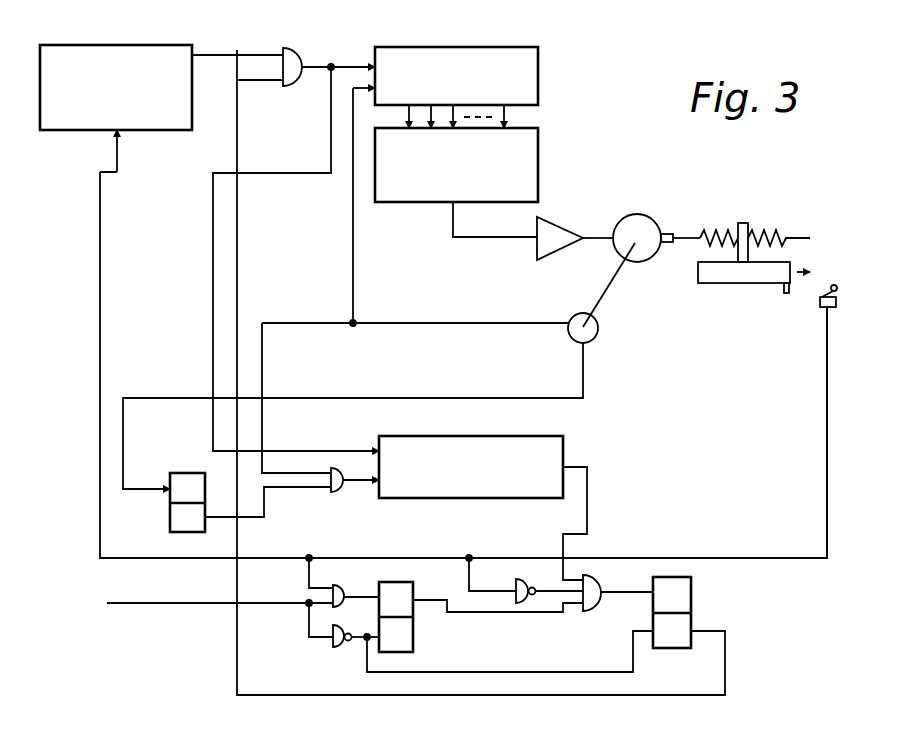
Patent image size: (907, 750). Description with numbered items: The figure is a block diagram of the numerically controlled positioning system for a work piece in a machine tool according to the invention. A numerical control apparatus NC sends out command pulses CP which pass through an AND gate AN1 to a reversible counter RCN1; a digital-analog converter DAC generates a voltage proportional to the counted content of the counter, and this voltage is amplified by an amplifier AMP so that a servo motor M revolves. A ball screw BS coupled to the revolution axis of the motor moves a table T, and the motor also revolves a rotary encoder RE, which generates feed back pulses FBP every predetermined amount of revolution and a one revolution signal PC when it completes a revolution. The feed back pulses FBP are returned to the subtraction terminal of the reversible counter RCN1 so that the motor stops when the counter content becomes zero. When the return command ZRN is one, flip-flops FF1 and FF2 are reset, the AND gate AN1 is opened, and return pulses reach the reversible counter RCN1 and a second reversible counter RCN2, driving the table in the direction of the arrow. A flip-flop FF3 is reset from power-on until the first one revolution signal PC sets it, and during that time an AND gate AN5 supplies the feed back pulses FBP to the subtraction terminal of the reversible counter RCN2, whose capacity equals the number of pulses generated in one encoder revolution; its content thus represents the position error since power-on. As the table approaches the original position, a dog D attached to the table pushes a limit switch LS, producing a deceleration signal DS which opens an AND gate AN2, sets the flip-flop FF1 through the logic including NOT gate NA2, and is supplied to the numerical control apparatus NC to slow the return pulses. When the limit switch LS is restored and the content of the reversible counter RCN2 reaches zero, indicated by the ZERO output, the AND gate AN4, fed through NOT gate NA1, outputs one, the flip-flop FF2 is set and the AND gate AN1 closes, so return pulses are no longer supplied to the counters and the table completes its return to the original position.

The numerical control apparatus NC is at (185, 26).
The command pulses CP is at (238, 52).
The AND gate AN1 is at (296, 50).
The reversible counter RCN1 is at (538, 65).
The digital-analog converter DAC is at (538, 148).
The amplifier AMP is at (575, 214).
The servo motor M is at (643, 222).
The ball screw BS is at (778, 234).
The table T is at (730, 284).
The dog D is at (786, 294).
The limit switch LS is at (837, 302).
The deceleration signal DS is at (826, 428).
The feed back pulses FBP is at (502, 306).
The rotary encoder RE is at (598, 328).
The first one revolution signal PC is at (583, 360).
The reversible counter RCN2 is at (563, 444).
The zero content signal ZERO is at (664, 488).
The flip-flop FF3 is at (183, 472).
The AND gate AN5 is at (340, 492).
The command for returning the table to an original position ZRN is at (186, 614).
The AND gate AN2 is at (360, 580).
The NOT gate NA2 is at (340, 648).
The flip-flop FF1 is at (408, 582).
The NOT gate NA1 is at (530, 570).
The AND gate AN4 is at (596, 608).
The flip-flop FF2 is at (685, 576).